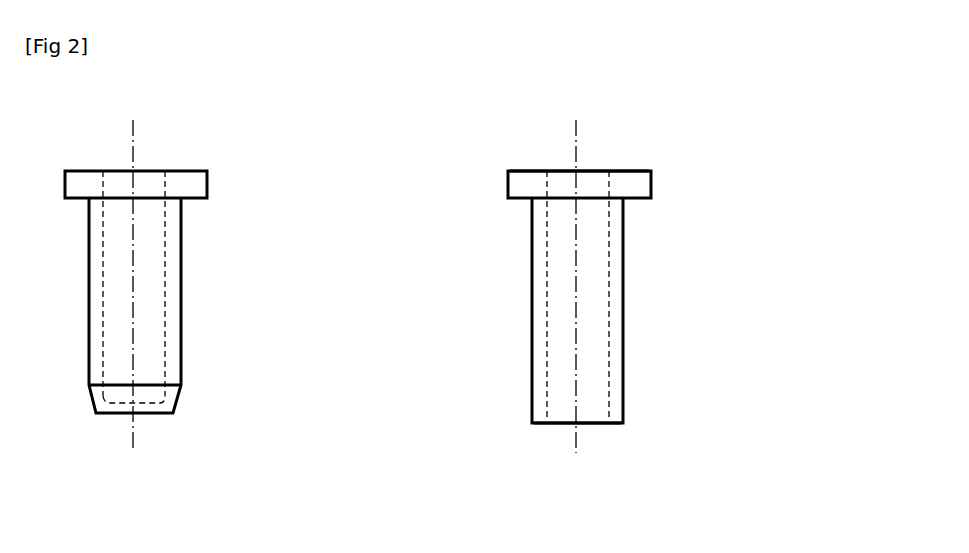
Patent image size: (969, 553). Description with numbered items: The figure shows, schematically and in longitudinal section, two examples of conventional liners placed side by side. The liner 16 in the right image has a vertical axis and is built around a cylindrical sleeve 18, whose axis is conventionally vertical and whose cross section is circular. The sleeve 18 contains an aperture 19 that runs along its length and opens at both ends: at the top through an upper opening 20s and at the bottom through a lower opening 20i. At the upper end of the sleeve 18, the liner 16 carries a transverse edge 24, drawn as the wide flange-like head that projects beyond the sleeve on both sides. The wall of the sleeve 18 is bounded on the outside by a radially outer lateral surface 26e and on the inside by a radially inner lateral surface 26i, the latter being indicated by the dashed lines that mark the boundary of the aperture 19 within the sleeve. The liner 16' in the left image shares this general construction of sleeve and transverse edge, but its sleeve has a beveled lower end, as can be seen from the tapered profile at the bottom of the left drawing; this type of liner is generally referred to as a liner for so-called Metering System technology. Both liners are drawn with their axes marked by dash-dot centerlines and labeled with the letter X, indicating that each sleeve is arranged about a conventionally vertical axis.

The liner 16' is at (253, 297).
The liner 16 is at (694, 295).
The cylindrical sleeve 18 is at (632, 363).
The aperture 19 is at (590, 220).
The upper opening 20s is at (587, 181).
The lower opening 20i is at (590, 414).
The transverse edge 24 is at (628, 188).
The radially outer lateral surface 26e is at (625, 258).
The radially inner lateral surface 26i is at (610, 302).